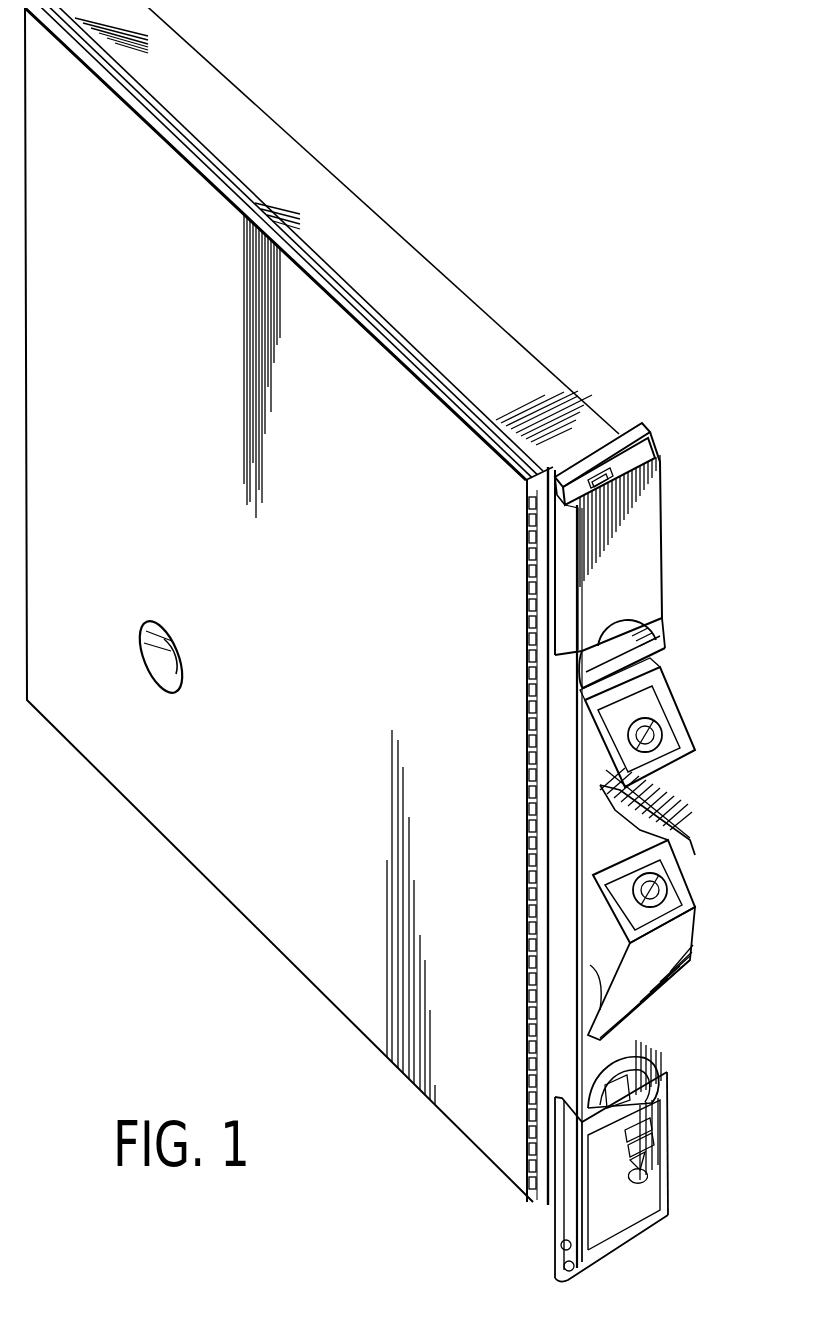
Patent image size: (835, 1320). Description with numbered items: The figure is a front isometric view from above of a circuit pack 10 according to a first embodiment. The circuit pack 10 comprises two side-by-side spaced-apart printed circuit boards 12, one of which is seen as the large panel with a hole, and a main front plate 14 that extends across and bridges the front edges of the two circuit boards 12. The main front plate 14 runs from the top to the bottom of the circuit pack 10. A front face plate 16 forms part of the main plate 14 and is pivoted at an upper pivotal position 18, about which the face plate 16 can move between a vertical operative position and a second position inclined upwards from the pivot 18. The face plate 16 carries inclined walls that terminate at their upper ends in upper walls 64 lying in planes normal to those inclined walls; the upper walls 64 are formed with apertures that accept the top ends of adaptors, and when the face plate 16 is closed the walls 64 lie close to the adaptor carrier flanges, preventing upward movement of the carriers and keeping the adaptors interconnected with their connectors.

The circuit pack 10 is at (570, 330).
The printed circuit board 12 is at (478, 306).
The main front plate 14 is at (648, 575).
The front face plate 16 is at (690, 824).
The upper pivotal position 18 is at (655, 672).
The upper wall 64 is at (688, 750).